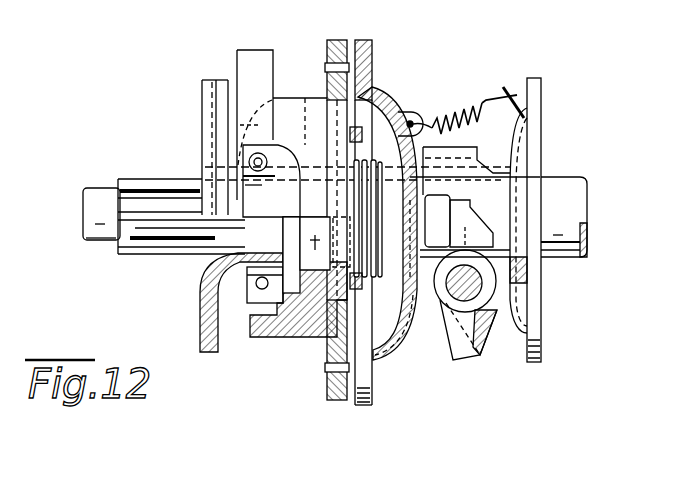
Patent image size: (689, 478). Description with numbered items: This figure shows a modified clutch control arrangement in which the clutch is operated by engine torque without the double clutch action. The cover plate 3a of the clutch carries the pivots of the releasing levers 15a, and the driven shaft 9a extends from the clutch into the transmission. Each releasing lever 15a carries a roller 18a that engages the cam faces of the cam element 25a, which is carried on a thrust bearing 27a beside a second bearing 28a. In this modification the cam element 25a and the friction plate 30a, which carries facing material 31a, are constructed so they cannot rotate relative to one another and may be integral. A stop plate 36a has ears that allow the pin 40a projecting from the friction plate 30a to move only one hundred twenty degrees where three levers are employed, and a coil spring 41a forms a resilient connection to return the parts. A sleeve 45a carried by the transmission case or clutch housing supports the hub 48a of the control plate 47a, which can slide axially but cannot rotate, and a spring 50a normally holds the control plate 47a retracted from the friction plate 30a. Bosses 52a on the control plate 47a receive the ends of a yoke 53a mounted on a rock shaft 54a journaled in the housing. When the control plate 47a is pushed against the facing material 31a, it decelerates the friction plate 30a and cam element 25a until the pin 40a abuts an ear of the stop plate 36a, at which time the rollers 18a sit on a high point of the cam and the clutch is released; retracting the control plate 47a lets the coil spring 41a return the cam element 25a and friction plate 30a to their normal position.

The cover plate 3a is at (201, 312).
The driven shaft 9a is at (181, 186).
The releasing lever 15a is at (250, 62).
The roller 18a is at (283, 190).
The cam element 25a is at (288, 117).
The thrust bearing 27a is at (260, 300).
The bearing 28a is at (297, 333).
The friction plate 30a is at (337, 38).
The facing material 31a is at (342, 398).
The stop plate 36a is at (398, 110).
The pin 40a is at (362, 150).
The coil spring 41a is at (396, 318).
The sleeve 45a is at (512, 192).
The control plate 47a is at (367, 370).
The hub 48a is at (510, 167).
The spring 50a is at (472, 100).
The boss 52a is at (437, 222).
The yoke 53a is at (500, 247).
The rock shaft 54a is at (480, 290).